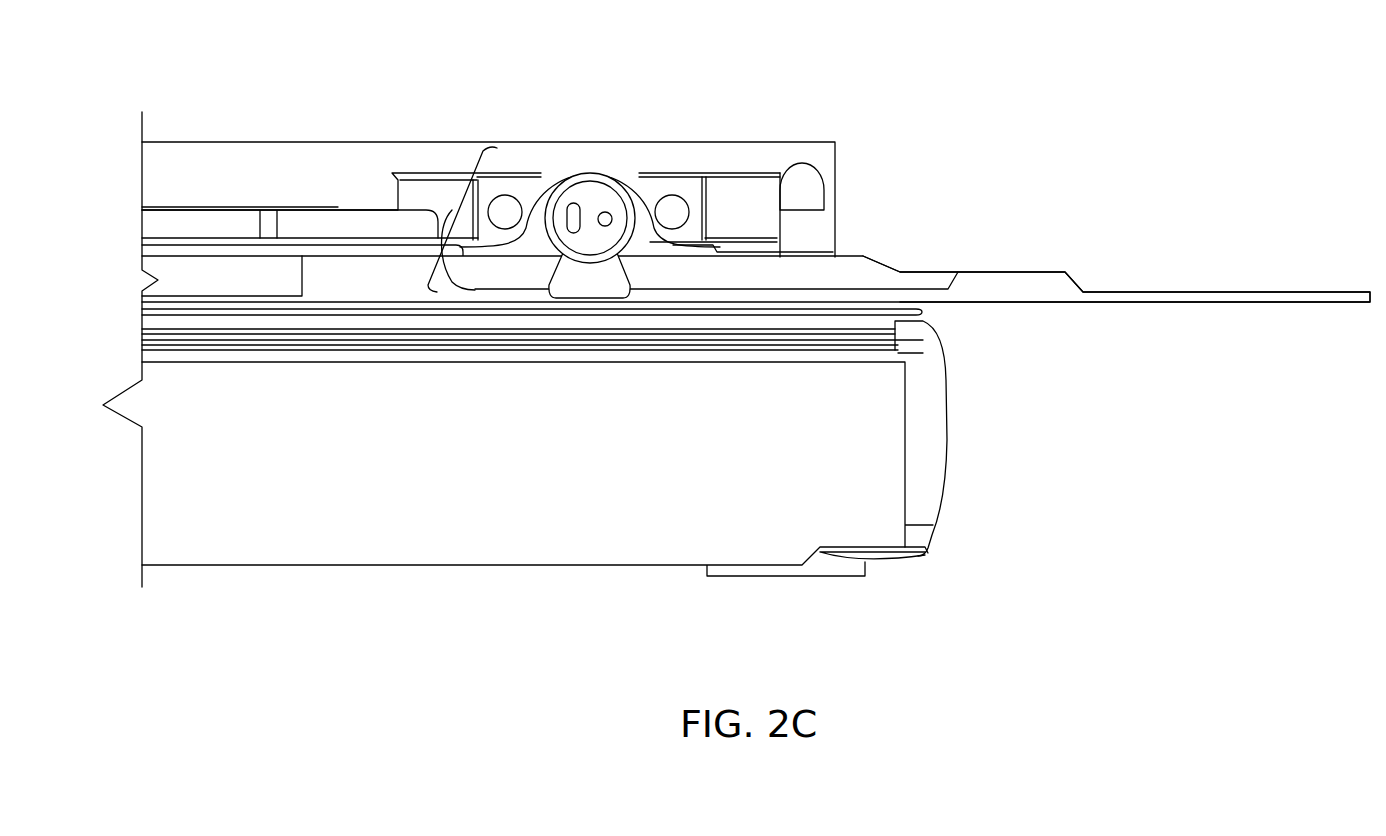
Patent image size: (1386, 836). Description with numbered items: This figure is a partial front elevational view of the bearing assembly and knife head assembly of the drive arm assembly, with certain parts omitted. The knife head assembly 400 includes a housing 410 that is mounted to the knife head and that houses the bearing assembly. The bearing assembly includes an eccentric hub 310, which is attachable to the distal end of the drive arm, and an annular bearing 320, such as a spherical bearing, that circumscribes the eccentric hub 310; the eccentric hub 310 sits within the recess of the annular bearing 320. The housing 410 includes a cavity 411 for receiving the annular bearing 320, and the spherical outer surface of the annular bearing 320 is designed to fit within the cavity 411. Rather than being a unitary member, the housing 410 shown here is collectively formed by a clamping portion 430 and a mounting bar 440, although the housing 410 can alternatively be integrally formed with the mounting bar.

The knife head assembly 400 is at (467, 210).
The eccentric hub 310 is at (582, 198).
The clamping portion 430 is at (600, 153).
The annular bearing 320 is at (636, 185).
The housing 410 is at (663, 218).
The cavity 411 is at (630, 255).
The mounting bar 440 is at (865, 271).